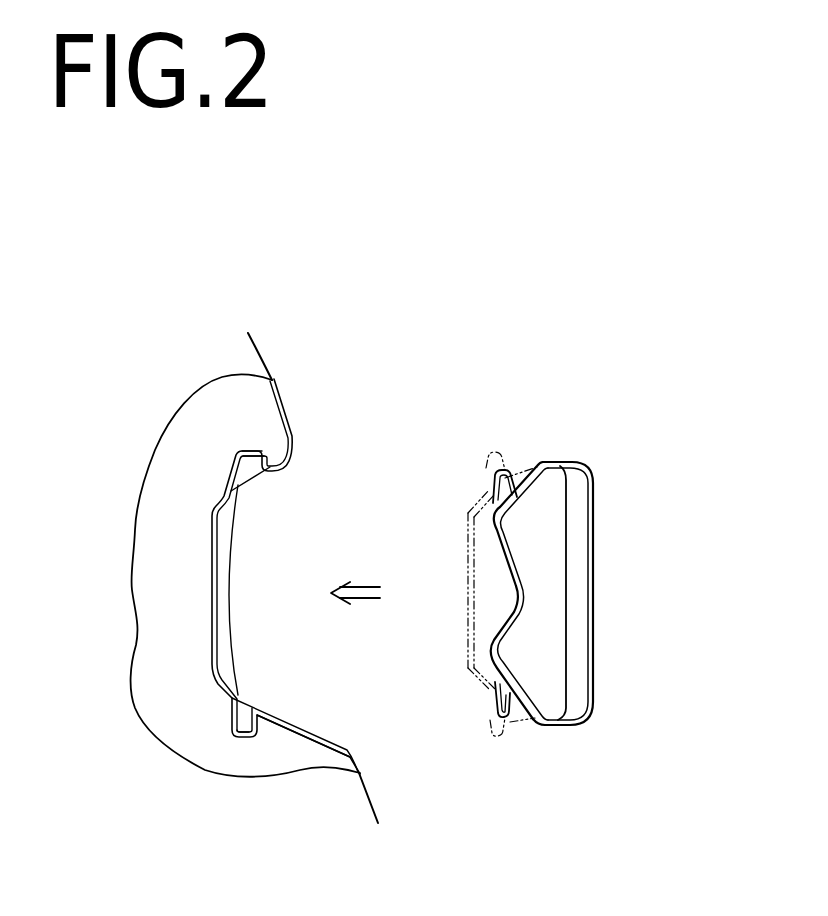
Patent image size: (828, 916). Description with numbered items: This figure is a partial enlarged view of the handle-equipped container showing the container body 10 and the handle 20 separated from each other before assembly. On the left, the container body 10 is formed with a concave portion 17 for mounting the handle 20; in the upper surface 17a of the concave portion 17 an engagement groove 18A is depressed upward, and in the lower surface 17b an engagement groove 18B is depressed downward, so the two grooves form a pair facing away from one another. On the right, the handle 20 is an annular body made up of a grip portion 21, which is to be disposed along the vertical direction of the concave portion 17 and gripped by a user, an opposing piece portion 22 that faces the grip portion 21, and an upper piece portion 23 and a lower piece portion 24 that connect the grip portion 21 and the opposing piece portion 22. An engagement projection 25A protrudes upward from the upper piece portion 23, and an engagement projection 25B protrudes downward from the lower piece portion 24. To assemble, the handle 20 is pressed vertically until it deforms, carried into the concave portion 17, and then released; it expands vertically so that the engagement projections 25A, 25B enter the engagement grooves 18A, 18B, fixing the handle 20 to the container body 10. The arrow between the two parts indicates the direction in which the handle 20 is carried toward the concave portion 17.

The container body 10 is at (288, 392).
The concave portion 17 is at (223, 583).
The upper surface 17a is at (265, 470).
The lower surface 17b is at (278, 717).
The engagement groove 18A is at (245, 472).
The engagement groove 18B is at (240, 712).
The handle 20 is at (563, 585).
The grip portion 21 is at (596, 604).
The opposing piece portion 22 is at (512, 592).
The upper piece portion 23 is at (540, 465).
The lower piece portion 24 is at (535, 722).
The engagement projection 25A is at (506, 460).
The engagement projection 25B is at (495, 728).